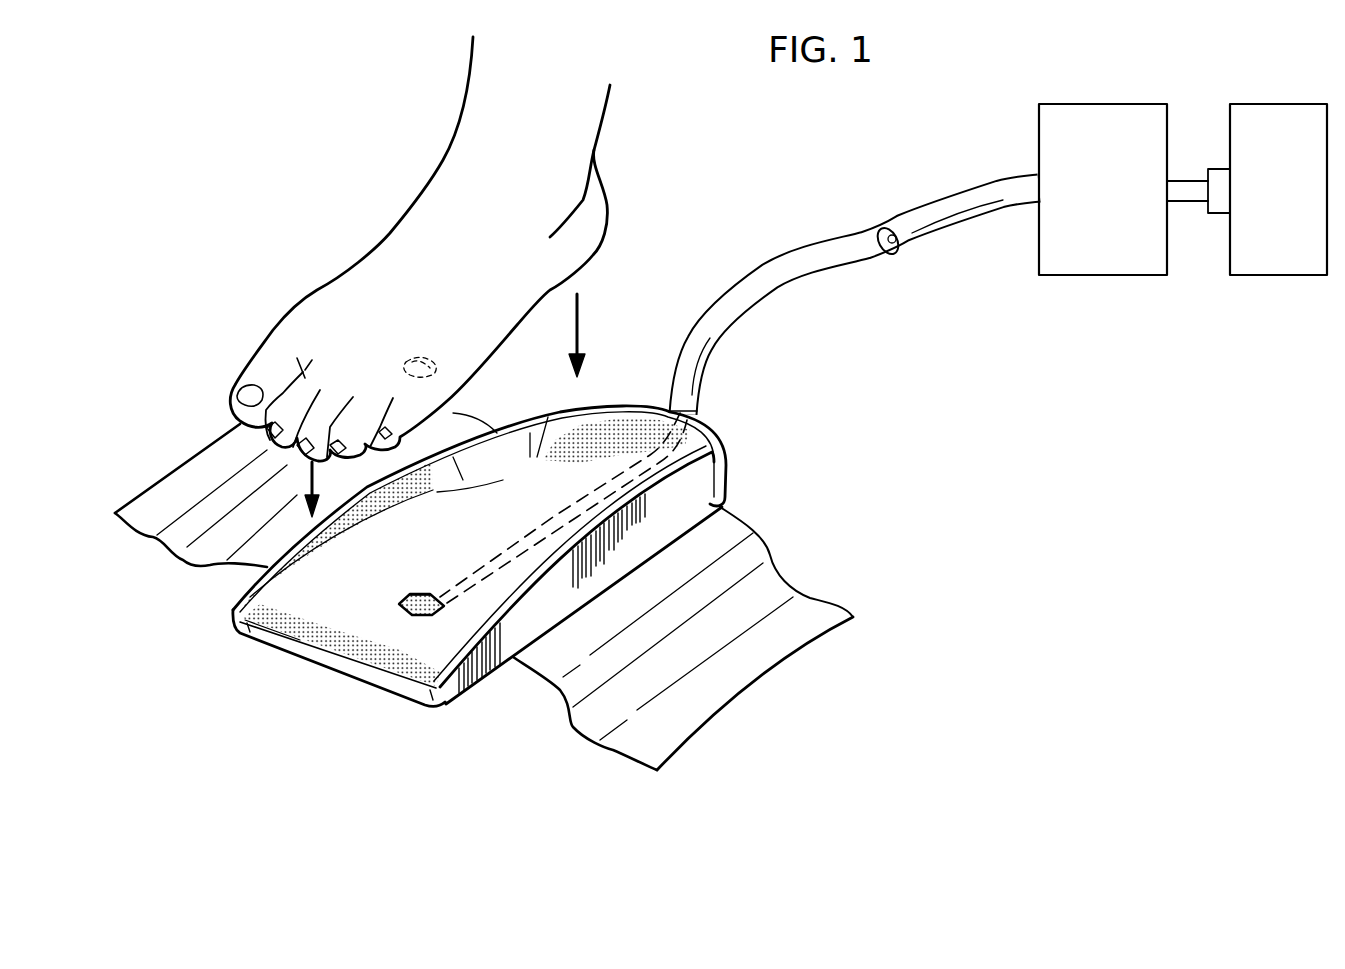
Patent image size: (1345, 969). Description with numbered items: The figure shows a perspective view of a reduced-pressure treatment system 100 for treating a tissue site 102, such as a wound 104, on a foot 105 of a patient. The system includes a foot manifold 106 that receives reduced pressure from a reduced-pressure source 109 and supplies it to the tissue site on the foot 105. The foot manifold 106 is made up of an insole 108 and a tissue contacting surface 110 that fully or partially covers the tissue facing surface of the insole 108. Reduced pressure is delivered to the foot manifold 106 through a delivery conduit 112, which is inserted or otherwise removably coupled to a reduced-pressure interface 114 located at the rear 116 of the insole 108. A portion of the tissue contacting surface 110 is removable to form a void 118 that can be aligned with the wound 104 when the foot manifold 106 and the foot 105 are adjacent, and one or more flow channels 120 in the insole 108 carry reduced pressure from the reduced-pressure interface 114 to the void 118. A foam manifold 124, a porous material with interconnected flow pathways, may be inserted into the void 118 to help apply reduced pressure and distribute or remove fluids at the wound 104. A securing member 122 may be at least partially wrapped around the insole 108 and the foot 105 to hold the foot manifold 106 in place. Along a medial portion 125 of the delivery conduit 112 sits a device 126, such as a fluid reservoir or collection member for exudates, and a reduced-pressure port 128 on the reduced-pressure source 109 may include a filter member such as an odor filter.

The reduced-pressure treatment system 100 is at (962, 484).
The tissue site 102 is at (416, 358).
The wound 104 is at (428, 357).
The foot 105 is at (403, 213).
The foot manifold 106 is at (234, 620).
The insole 108 is at (455, 692).
The reduced-pressure source 109 is at (1278, 104).
The tissue contacting surface 110 is at (320, 632).
The delivery conduit 112 is at (750, 271).
The reduced-pressure interface 114 is at (698, 402).
The rear 116 is at (716, 421).
The void 118 is at (399, 603).
The flow channels 120 is at (497, 550).
The securing member 122 is at (817, 603).
The foam manifold 124 is at (417, 593).
The medial portion 125 is at (1038, 171).
The device 126 is at (1104, 104).
The reduced-pressure port 128 is at (1218, 167).